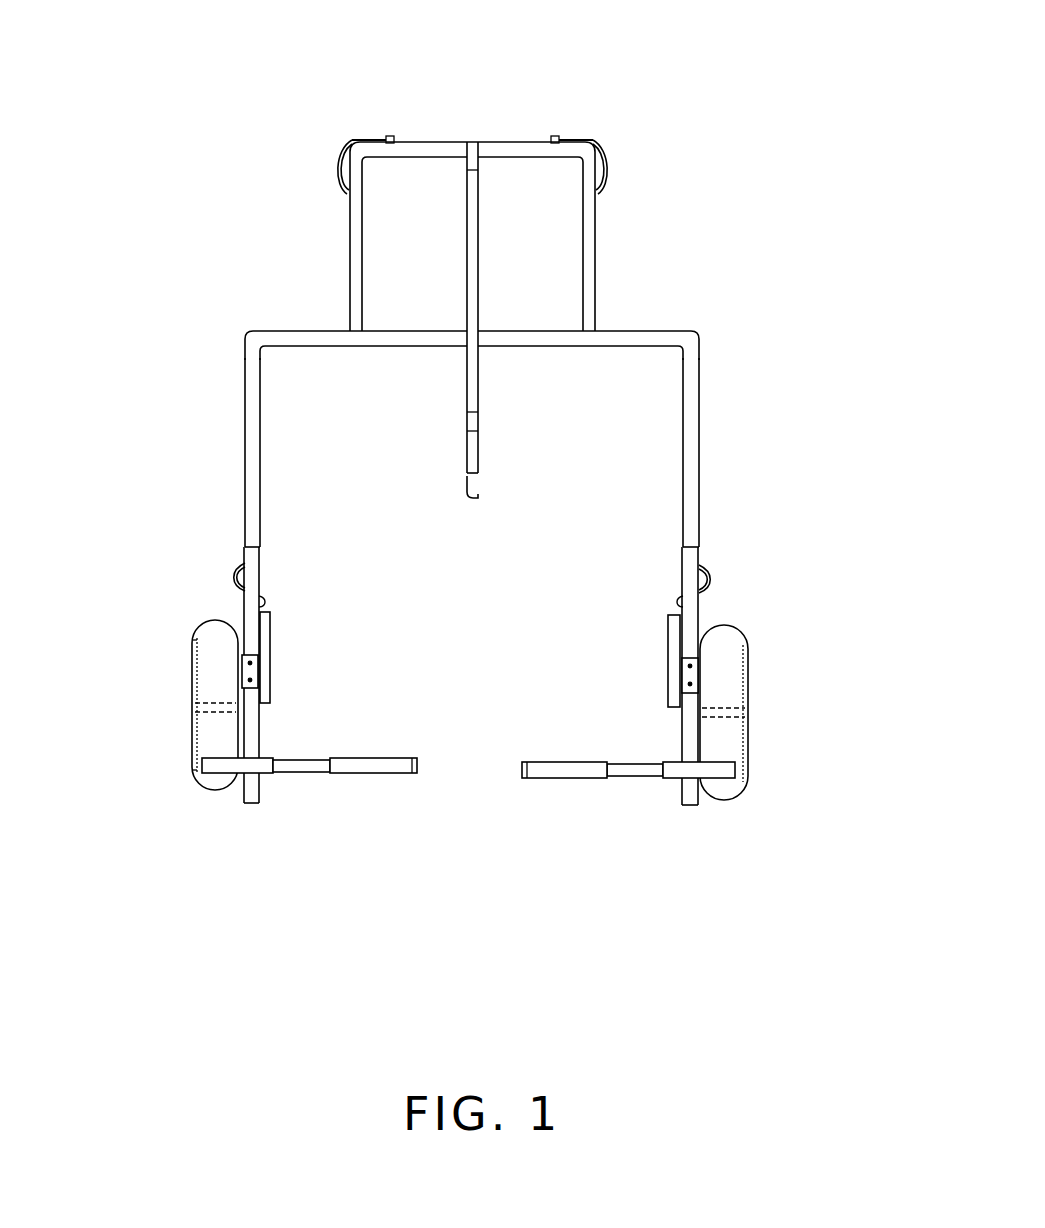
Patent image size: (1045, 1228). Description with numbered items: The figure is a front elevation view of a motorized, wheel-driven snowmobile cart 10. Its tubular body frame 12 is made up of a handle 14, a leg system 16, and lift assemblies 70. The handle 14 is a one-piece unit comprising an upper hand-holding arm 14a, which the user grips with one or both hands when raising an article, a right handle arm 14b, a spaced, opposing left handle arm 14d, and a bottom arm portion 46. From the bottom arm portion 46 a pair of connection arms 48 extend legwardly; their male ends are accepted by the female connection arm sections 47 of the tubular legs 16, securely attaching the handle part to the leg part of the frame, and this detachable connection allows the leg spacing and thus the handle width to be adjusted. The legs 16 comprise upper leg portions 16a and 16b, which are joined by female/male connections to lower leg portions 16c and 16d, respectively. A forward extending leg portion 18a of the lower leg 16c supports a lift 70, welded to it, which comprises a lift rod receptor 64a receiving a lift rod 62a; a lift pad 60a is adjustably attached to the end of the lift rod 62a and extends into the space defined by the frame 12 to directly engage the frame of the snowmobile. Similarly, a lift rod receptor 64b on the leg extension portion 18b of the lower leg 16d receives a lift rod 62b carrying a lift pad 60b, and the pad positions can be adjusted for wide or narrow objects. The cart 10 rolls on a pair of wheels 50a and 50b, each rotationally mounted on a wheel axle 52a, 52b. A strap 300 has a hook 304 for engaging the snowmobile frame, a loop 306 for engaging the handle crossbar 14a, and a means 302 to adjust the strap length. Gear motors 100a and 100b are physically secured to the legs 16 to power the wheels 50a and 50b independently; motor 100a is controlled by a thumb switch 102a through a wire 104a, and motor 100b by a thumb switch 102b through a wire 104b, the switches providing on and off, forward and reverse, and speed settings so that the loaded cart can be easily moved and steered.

The motorized wheel-driven snowmobile cart 10 is at (502, 44).
The body frame 12 is at (232, 303).
The handle portion 14 is at (637, 270).
The hand-holding arm 14a is at (453, 158).
The handle arm 14b is at (583, 280).
The opposite handle arm 14d is at (363, 287).
The leg portions 16 is at (728, 428).
The upper leg portion 16a is at (244, 485).
The upper leg portion 16b is at (700, 503).
The lower leg portion 16c is at (262, 723).
The lower leg portion 16d is at (680, 733).
The forward extending leg portion 18a is at (260, 547).
The leg extension portion 18b is at (681, 550).
The bottom arm portion 46 is at (390, 348).
The connection arm sections 47 is at (283, 348).
The connection arms 48 is at (303, 331).
The wheel 50a is at (192, 786).
The wheel 50b is at (725, 788).
The wheel axle 52a is at (208, 712).
The wheel axle 52b is at (735, 718).
The lift pad 60a is at (375, 758).
The lift pad 60b is at (540, 780).
The lift rod 62a is at (222, 775).
The lift rod 62b is at (625, 763).
The lift rod receptor 64a is at (265, 780).
The lift rod receptor 64b is at (678, 780).
The lift assemblies 70 is at (392, 855).
The gear motor 100a is at (270, 640).
The gear motor 100b is at (668, 640).
The thumb switch 102a is at (391, 138).
The thumb switch 102b is at (561, 139).
The wire 104a is at (345, 190).
The wire 104b is at (602, 150).
The strap means 300 is at (480, 228).
The means to adjust strap length 302 is at (478, 425).
The hook 304 is at (470, 487).
The loop 306 is at (474, 145).